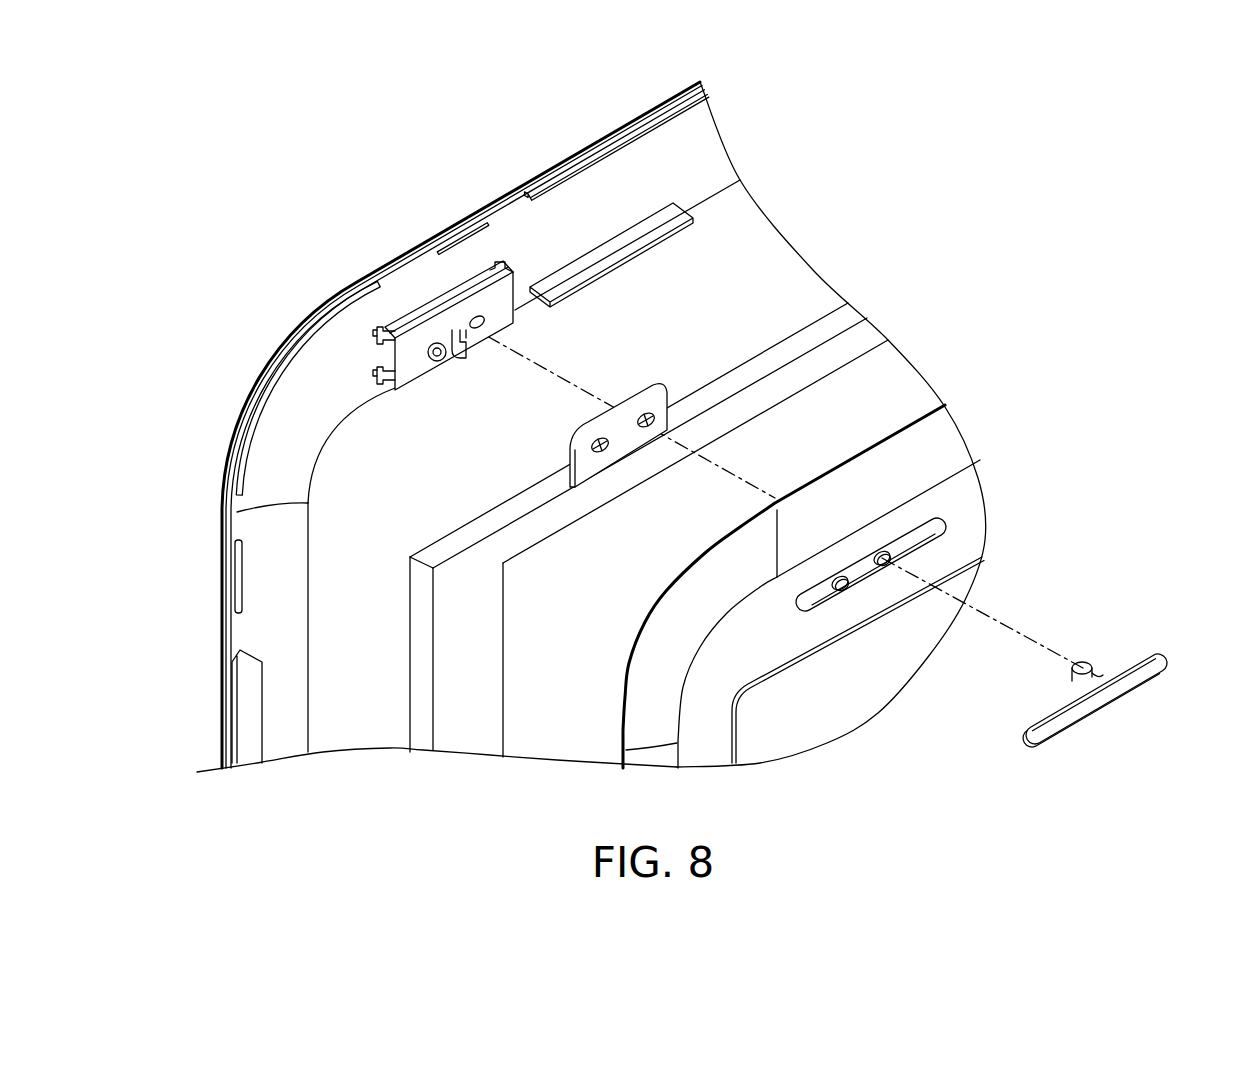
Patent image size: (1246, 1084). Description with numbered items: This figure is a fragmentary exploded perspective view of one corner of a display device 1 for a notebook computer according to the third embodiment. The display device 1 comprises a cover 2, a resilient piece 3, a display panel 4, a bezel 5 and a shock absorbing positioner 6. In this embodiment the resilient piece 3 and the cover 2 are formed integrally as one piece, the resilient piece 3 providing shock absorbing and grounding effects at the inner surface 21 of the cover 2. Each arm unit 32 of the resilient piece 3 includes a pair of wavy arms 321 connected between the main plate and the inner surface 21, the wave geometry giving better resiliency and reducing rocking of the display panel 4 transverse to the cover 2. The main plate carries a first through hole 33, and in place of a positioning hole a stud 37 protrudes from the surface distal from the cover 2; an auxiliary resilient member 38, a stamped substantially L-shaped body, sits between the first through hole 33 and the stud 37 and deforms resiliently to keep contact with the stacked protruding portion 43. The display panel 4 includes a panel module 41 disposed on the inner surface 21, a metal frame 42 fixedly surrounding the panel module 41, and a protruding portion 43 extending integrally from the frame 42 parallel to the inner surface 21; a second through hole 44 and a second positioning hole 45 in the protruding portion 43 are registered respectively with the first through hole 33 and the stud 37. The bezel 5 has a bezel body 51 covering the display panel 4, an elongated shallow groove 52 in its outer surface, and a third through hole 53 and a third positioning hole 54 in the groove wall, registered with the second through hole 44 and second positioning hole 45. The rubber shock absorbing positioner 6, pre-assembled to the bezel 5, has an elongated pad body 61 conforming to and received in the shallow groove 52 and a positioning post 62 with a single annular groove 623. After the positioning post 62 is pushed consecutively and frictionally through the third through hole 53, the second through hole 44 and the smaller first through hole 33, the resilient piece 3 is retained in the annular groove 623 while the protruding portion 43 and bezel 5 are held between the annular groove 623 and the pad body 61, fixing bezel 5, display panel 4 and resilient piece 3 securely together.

The display device 1 is at (950, 260).
The cover 2 is at (438, 425).
The inner surface 21 is at (272, 430).
The resilient piece 3 is at (432, 342).
The arm unit 32 is at (347, 359).
The wavy arm 321 is at (376, 342).
The first through hole 33 is at (486, 324).
The stud 37 is at (436, 362).
The auxiliary resilient member 38 is at (460, 358).
The display panel 4 is at (676, 468).
The panel module 41 is at (892, 385).
The frame 42 is at (750, 372).
The protruding portion 43 is at (599, 396).
The second through hole 44 is at (663, 394).
The second positioning hole 45 is at (590, 443).
The bezel 5 is at (809, 586).
The bezel body 51 is at (685, 627).
The shallow groove 52 is at (915, 603).
The third through hole 53 is at (886, 558).
The third positioning hole 54 is at (850, 590).
The shock absorbing positioner 6 is at (1107, 649).
The pad body 61 is at (1110, 702).
The positioning post 62 is at (1083, 633).
The annular groove 623 is at (1108, 668).